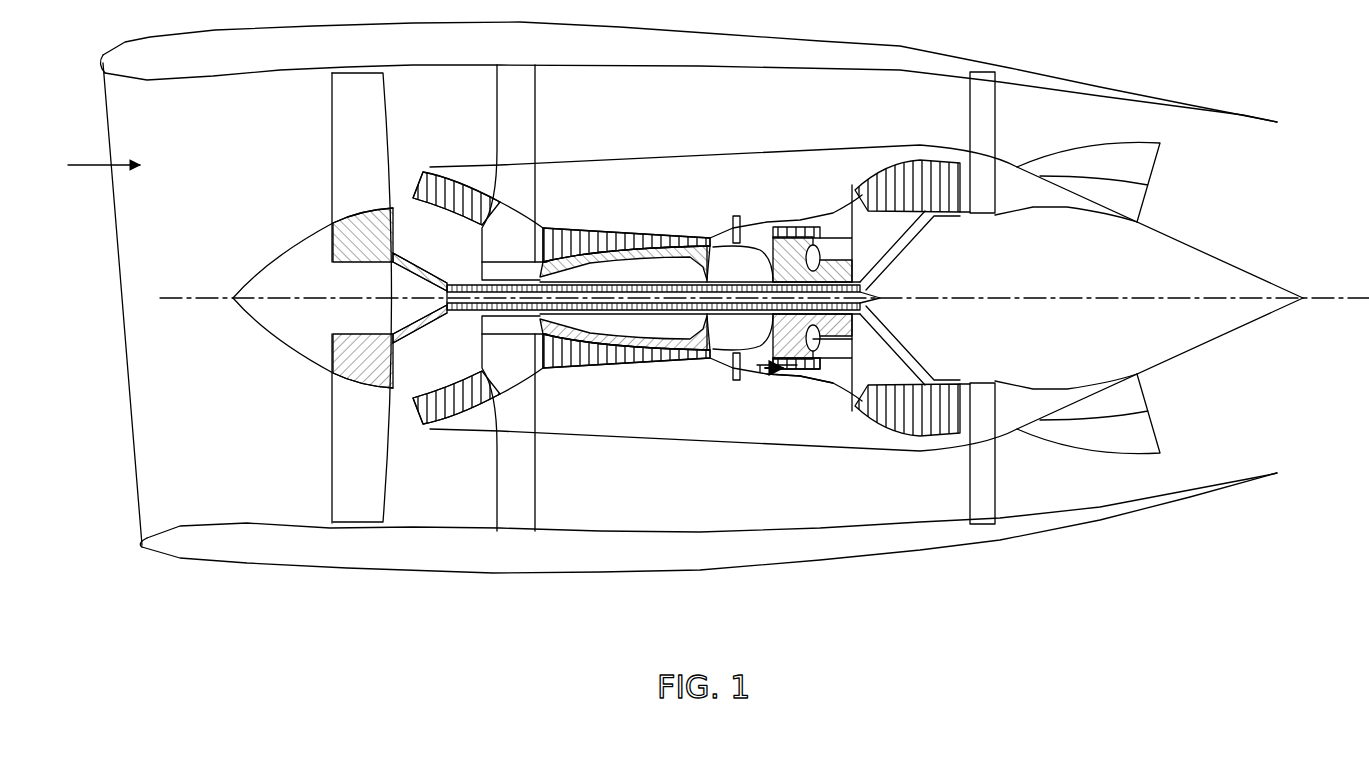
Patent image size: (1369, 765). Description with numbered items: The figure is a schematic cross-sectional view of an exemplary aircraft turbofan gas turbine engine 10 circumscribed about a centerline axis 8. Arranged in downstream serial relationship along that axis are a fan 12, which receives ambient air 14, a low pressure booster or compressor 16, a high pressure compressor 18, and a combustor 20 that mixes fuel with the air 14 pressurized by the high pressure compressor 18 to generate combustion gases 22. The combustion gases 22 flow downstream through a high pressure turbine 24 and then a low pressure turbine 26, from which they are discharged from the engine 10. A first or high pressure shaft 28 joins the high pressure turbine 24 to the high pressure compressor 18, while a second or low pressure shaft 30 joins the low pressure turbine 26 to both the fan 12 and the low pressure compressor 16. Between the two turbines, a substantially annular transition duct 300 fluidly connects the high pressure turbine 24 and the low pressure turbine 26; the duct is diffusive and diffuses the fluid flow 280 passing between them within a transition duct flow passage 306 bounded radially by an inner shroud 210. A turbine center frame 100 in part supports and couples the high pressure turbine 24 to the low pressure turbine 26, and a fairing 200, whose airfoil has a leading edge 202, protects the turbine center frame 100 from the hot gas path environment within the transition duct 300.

The centerline axis 8 is at (1308, 297).
The gas turbine engine 10 is at (477, 600).
The fan 12 is at (389, 108).
The ambient air 14 is at (80, 166).
The low pressure compressor 16 is at (470, 175).
The high pressure compressor 18 is at (600, 228).
The combustor 20 is at (750, 220).
The combustion gases 22 is at (760, 373).
The high pressure turbine 24 is at (810, 377).
The low pressure turbine 26 is at (928, 437).
The high pressure shaft 28 is at (737, 272).
The low pressure shaft 30 is at (580, 280).
The turbine center frame 100 is at (837, 360).
The fairing 200 is at (828, 390).
The leading edge 202 is at (815, 220).
The inner shroud 210 is at (825, 378).
The fluid flow 280 is at (842, 216).
The transition duct 300 is at (843, 193).
The transition duct flow passage 306 is at (808, 420).